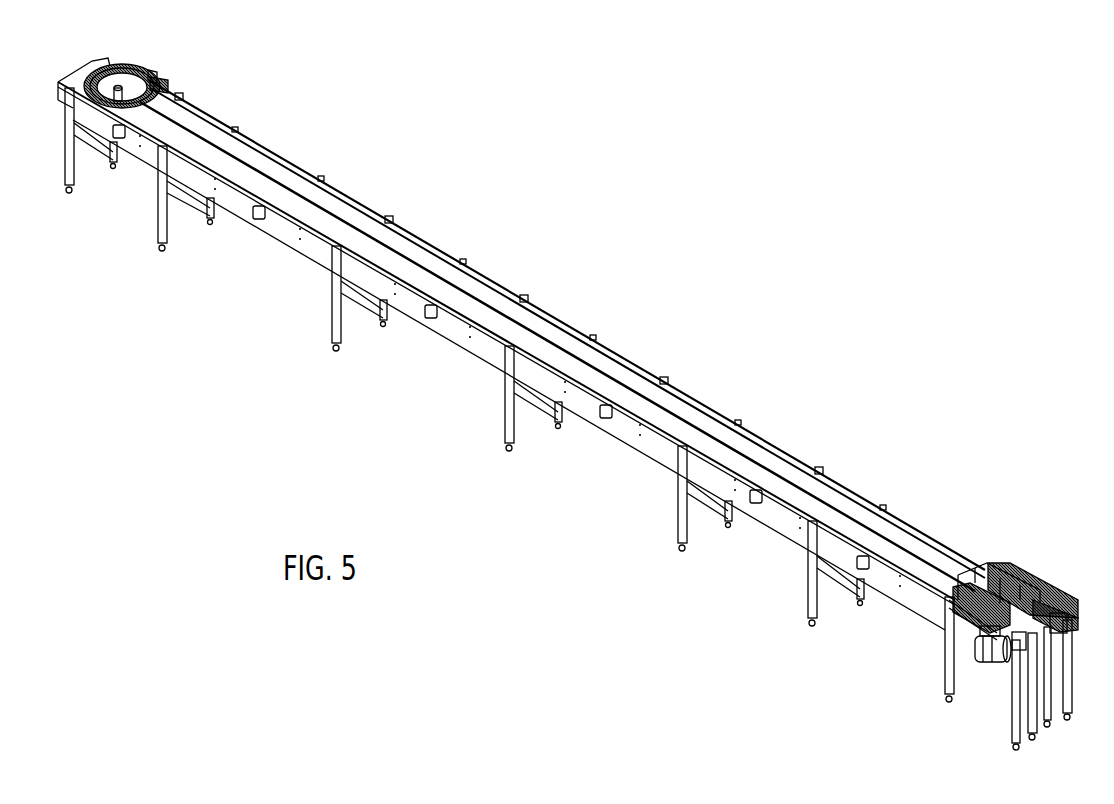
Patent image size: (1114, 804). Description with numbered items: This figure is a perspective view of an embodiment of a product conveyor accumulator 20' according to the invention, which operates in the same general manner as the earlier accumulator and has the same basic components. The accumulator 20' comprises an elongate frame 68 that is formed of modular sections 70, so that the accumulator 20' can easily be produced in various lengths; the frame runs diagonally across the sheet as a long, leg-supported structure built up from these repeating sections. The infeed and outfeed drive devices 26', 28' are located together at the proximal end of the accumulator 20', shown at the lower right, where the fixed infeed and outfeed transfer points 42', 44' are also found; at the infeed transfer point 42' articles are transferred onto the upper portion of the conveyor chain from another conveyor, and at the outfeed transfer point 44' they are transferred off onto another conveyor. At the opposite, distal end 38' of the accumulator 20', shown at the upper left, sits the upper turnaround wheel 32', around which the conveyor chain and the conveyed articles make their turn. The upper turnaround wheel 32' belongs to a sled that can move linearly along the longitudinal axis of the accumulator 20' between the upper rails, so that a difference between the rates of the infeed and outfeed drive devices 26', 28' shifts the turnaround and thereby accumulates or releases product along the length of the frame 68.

The product conveyor accumulator 20' is at (567, 325).
The infeed drive device 26' is at (984, 670).
The outfeed drive device 28' is at (1055, 660).
The upper turnaround wheel 32' is at (118, 75).
The distal end 38' is at (509, 395).
The infeed transfer point 42' is at (970, 617).
The outfeed transfer point 44' is at (1033, 569).
The elongate frame 68 is at (460, 330).
The modular sections 70 is at (178, 123).